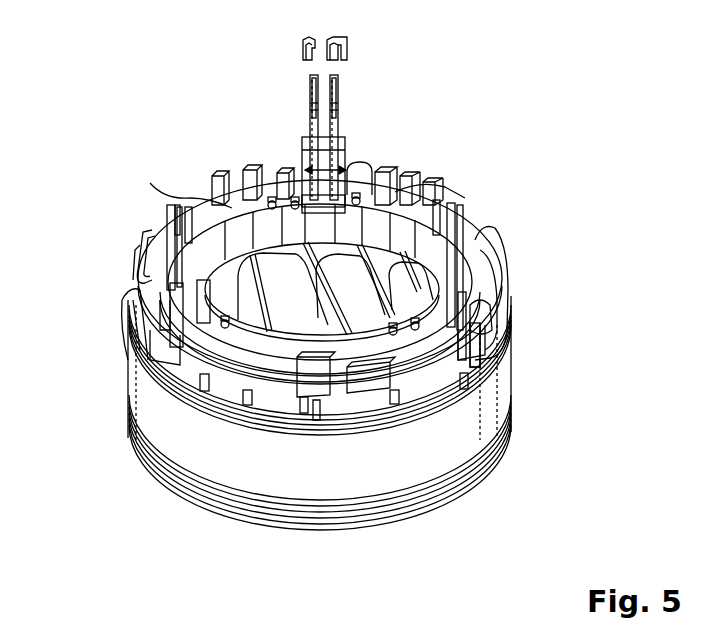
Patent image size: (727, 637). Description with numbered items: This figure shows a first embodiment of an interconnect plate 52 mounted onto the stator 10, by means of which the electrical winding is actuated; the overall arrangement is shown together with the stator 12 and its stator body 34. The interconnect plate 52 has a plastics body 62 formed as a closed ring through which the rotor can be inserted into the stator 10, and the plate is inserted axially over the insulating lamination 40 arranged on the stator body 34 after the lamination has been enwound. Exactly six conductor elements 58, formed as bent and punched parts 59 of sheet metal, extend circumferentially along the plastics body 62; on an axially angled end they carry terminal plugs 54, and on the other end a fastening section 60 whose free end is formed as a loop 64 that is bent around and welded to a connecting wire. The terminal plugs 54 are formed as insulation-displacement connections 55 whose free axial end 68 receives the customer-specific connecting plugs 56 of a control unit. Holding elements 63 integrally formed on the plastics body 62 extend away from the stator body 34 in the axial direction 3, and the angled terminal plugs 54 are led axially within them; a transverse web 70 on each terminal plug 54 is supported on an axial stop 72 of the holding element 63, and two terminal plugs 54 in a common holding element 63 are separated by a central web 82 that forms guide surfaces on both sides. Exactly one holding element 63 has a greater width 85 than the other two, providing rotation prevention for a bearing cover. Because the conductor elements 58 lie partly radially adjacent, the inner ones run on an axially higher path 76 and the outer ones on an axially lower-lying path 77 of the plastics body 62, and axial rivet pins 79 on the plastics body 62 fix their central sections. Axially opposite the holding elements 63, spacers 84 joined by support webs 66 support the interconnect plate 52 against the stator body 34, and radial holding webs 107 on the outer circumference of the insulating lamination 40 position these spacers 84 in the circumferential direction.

The axial direction 3 is at (318, 553).
The stator 10 is at (148, 512).
The stator 12 is at (522, 108).
The stator body 34 is at (500, 437).
The insulating lamination 40 is at (407, 420).
The interconnect plate 52 is at (310, 215).
The terminal plugs 54 is at (340, 88).
The insulation-displacement connections 55 is at (322, 139).
The connecting plugs 56 is at (303, 42).
The conductor elements 58 is at (159, 254).
The bent and punched parts 59 is at (177, 220).
The fastening section 60 is at (227, 172).
The plastics body 62 is at (357, 205).
The holding elements 63 is at (150, 297).
The loop 64 is at (482, 232).
The support webs 66 is at (160, 338).
The free axial end 68 is at (311, 90).
The transverse web 70 is at (500, 306).
The axial stop 72 is at (306, 165).
The axially higher path 76 is at (305, 348).
The axially lower-lying path 77 is at (320, 365).
The rivet pins 79 is at (354, 195).
The central web 82 is at (138, 278).
The spacers 84 is at (480, 352).
The greater width 85 is at (400, 193).
The radial holding webs 107 is at (148, 346).